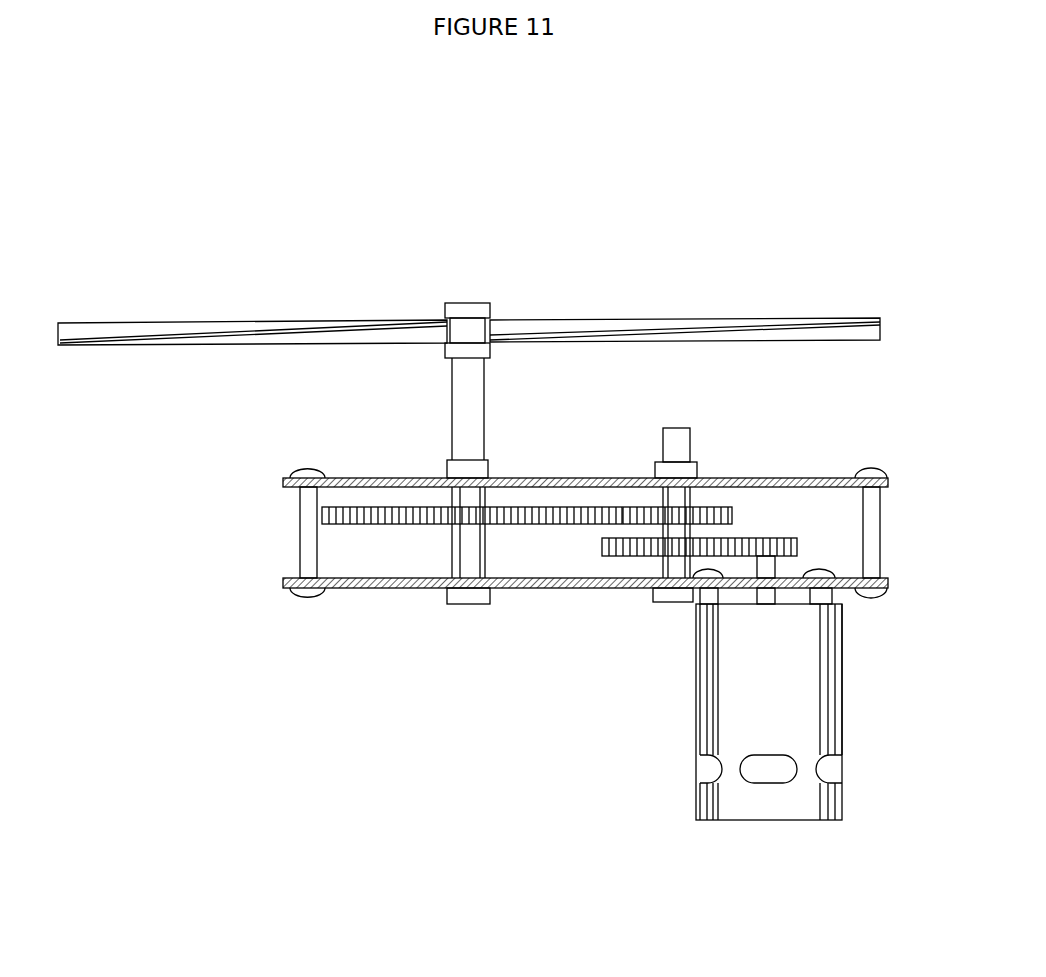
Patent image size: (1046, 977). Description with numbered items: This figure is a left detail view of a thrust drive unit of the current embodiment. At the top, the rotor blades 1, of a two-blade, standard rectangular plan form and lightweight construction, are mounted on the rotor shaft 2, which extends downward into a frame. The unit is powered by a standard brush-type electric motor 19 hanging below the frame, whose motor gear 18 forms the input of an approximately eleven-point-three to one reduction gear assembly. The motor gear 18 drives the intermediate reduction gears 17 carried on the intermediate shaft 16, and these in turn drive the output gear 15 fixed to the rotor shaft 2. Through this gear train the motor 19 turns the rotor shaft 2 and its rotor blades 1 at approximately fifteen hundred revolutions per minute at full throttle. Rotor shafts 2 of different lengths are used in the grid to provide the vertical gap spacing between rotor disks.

The rotor blade 1 is at (200, 323).
The rotor shaft 2 is at (460, 389).
The output gear 15 is at (395, 527).
The intermediate shaft 16 is at (676, 440).
The intermediate reduction gears 17 is at (733, 538).
The motor gear 18 is at (795, 545).
The electric motor 19 is at (748, 665).